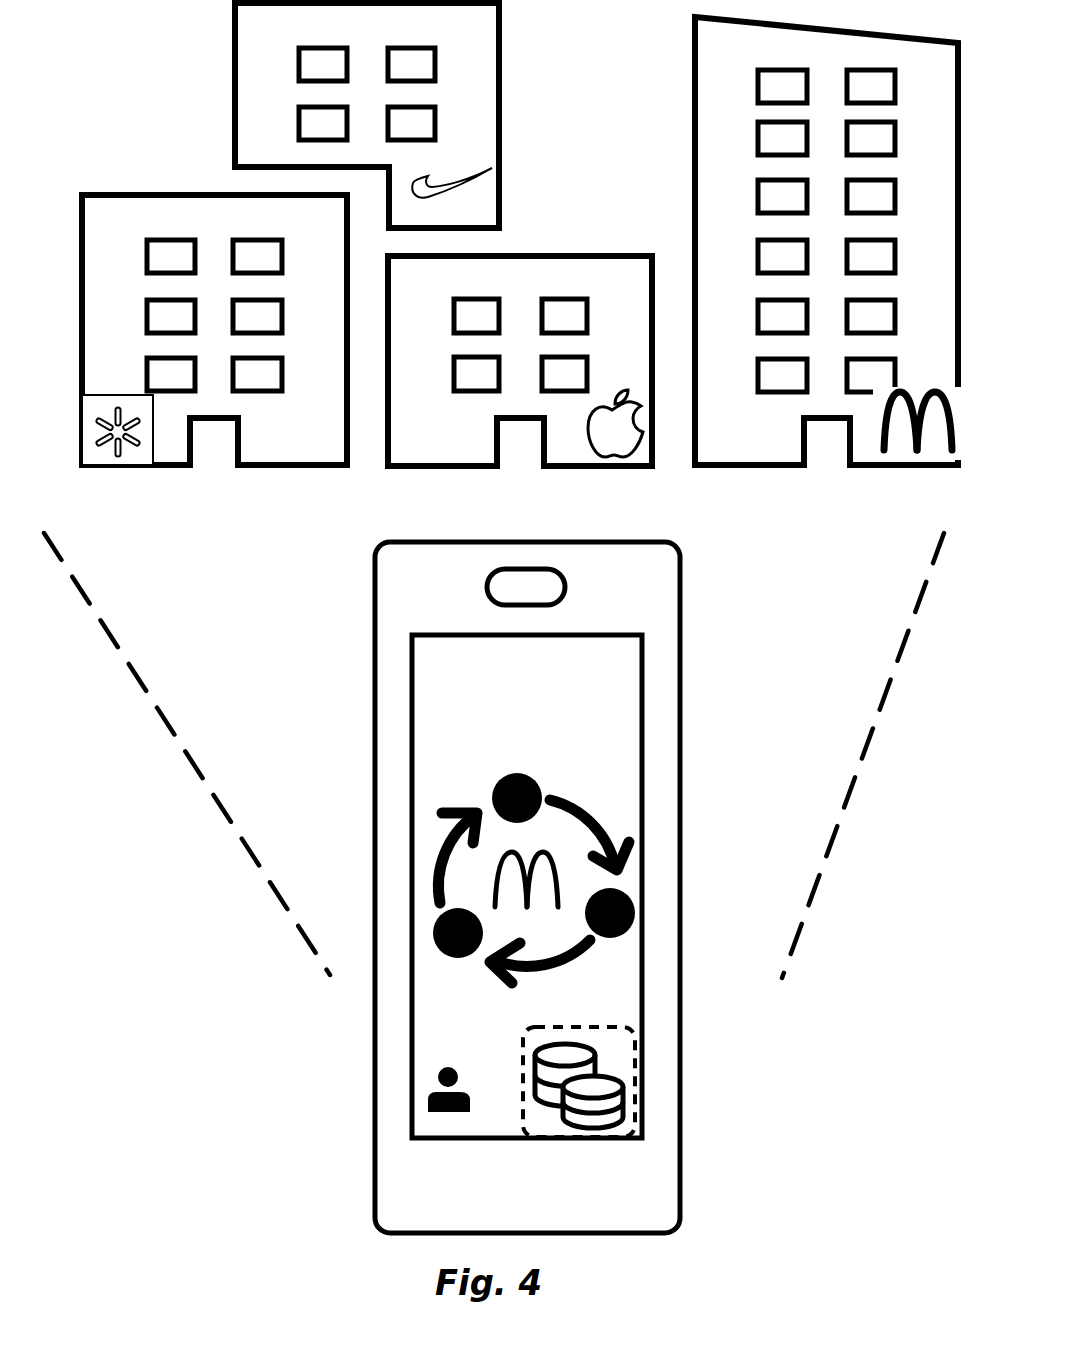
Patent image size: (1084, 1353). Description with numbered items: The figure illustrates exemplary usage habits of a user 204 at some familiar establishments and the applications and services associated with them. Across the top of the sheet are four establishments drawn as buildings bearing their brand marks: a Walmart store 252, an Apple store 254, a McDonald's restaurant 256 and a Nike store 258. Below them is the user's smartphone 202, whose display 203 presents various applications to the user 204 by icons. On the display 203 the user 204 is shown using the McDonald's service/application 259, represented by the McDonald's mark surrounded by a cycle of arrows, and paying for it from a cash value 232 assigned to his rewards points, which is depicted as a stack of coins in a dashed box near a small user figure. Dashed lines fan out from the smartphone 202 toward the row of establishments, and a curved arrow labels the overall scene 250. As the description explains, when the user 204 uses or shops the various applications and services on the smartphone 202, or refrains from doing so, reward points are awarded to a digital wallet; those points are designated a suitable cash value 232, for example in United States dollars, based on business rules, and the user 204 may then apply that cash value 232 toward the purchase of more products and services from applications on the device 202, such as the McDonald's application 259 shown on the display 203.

The smartphone 202 is at (553, 1191).
The display 203 is at (547, 712).
The user 204 is at (450, 1063).
The cash value 232 is at (615, 1027).
The environment 250 is at (182, 1188).
The Walmart store 252 is at (325, 453).
The Apple store 254 is at (462, 447).
The McDonald's restaurant 256 is at (777, 448).
The Nike store 258 is at (298, 35).
The McDonald's service/application 259 is at (565, 881).